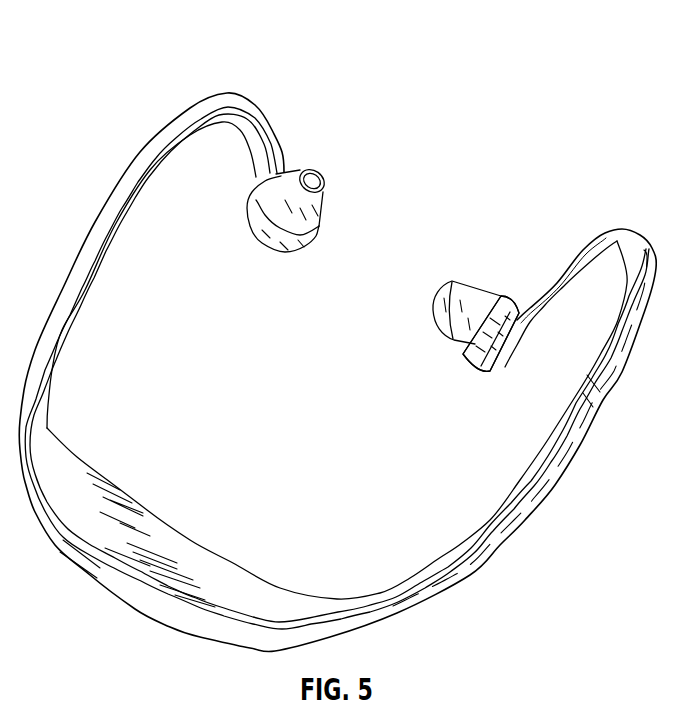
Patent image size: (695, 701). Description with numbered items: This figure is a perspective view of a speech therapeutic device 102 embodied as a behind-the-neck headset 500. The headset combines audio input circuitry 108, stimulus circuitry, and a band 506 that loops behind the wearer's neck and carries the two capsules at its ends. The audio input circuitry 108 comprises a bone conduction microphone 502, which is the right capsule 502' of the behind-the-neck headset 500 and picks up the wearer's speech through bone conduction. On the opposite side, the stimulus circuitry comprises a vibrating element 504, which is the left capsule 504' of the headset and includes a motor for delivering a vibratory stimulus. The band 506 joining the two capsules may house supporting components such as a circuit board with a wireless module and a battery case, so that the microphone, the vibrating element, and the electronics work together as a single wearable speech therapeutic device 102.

The speech therapeutic device 102 is at (150, 40).
The audio input circuitry 108 is at (465, 369).
The behind-the-neck headset 500 is at (499, 195).
The bone conduction microphone 502 is at (504, 304).
The right capsule 502' is at (467, 291).
The vibrating element 504 is at (292, 179).
The left capsule 504' is at (344, 171).
The band 506 is at (170, 537).